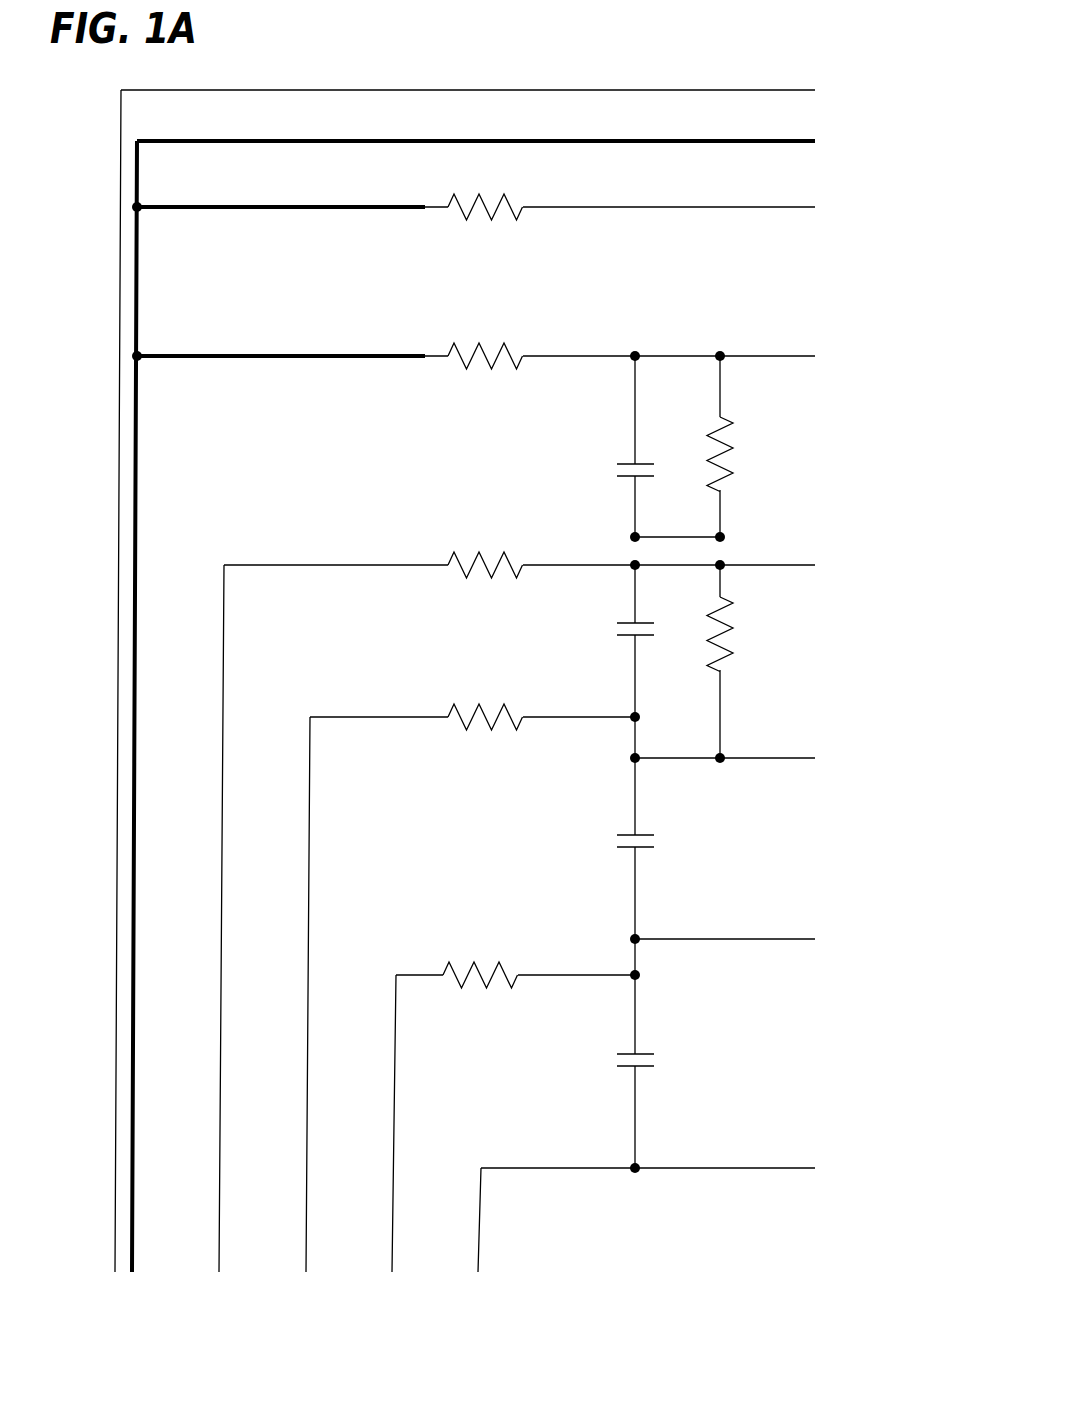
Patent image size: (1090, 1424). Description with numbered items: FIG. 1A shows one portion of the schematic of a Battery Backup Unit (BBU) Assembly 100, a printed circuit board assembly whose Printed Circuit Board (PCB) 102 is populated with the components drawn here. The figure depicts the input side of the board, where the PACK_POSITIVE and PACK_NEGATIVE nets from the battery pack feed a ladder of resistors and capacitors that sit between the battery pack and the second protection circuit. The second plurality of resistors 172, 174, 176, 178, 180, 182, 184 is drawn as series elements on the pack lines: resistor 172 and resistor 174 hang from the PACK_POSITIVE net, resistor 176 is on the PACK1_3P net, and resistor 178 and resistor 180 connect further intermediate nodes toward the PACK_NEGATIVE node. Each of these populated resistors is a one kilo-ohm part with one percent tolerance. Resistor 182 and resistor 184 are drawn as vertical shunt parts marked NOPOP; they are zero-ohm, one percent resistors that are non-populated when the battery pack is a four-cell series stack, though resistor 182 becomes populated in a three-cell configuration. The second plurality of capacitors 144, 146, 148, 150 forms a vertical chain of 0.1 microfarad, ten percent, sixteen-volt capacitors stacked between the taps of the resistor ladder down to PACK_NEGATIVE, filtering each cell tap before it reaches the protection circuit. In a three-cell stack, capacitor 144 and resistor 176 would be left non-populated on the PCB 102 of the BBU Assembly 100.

The Battery Backup Unit (BBU) Assembly 100 is at (493, 46).
The Printed Circuit Board (PCB) 102 is at (484, 100).
The capacitor 144 is at (630, 462).
The capacitor 146 is at (630, 622).
The capacitor 148 is at (630, 834).
The capacitor 150 is at (630, 1053).
The resistor 172 is at (513, 204).
The resistor 174 is at (513, 353).
The resistor 176 is at (470, 558).
The resistor 178 is at (470, 710).
The resistor 180 is at (467, 964).
The non-populated resistor 182 is at (725, 485).
The non-populated resistor 184 is at (725, 665).